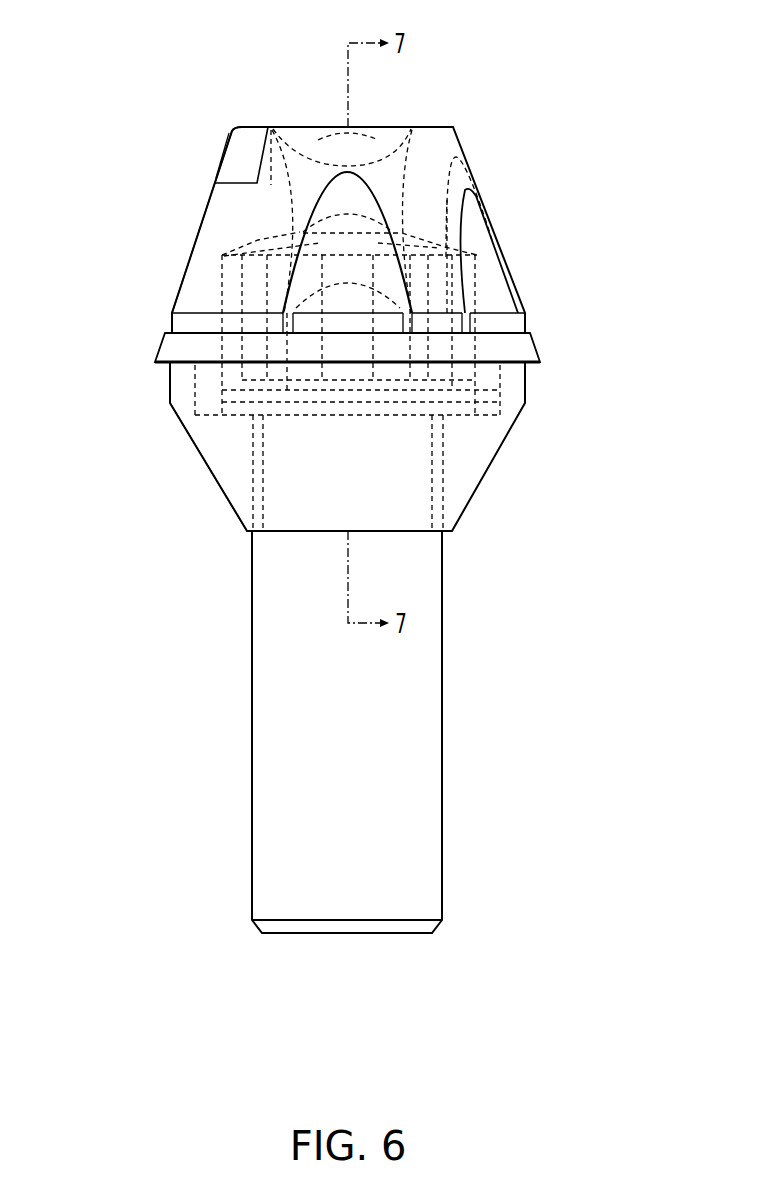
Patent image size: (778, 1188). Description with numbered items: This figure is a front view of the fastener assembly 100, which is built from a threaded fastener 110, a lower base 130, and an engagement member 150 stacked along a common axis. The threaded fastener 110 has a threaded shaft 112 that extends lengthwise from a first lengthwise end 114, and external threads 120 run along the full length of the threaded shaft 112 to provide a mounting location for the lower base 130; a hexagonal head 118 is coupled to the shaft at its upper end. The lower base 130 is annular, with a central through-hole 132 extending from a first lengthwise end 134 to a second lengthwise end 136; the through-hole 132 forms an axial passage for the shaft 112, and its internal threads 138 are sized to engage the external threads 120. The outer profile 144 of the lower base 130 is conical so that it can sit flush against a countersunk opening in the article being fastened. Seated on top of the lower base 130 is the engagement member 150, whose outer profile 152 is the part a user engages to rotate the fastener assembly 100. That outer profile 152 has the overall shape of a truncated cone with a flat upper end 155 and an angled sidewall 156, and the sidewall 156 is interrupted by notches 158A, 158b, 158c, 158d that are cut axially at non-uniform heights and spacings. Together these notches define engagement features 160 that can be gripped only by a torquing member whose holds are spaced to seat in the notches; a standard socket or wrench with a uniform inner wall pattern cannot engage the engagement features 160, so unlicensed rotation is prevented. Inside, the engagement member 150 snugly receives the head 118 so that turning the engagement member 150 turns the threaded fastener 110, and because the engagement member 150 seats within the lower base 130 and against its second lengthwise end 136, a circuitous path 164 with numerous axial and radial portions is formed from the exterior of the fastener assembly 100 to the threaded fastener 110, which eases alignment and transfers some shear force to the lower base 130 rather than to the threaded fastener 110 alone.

The fastener assembly 100 is at (101, 79).
The threaded fastener 110 is at (428, 773).
The threaded shaft 112 is at (445, 865).
The first lengthwise end 114 is at (373, 934).
The hexagonal head 118 is at (443, 300).
The external threads 120 is at (444, 725).
The lower base 130 is at (499, 450).
The central through-hole 132 is at (265, 494).
The first lengthwise end 134 is at (420, 532).
The second lengthwise end 136 is at (513, 363).
The internal threads 138 is at (265, 448).
The outer profile 144 is at (183, 425).
The engagement member 150 is at (467, 144).
The outer profile 152 is at (193, 245).
The flat upper end 155 is at (400, 126).
The angled sidewall 156 is at (497, 220).
The notch 158A is at (222, 162).
The notch 158b is at (472, 223).
The notch 158c is at (372, 207).
The notch 158d is at (340, 145).
The engagement features 160 is at (223, 123).
The circuitous path 164 is at (188, 387).